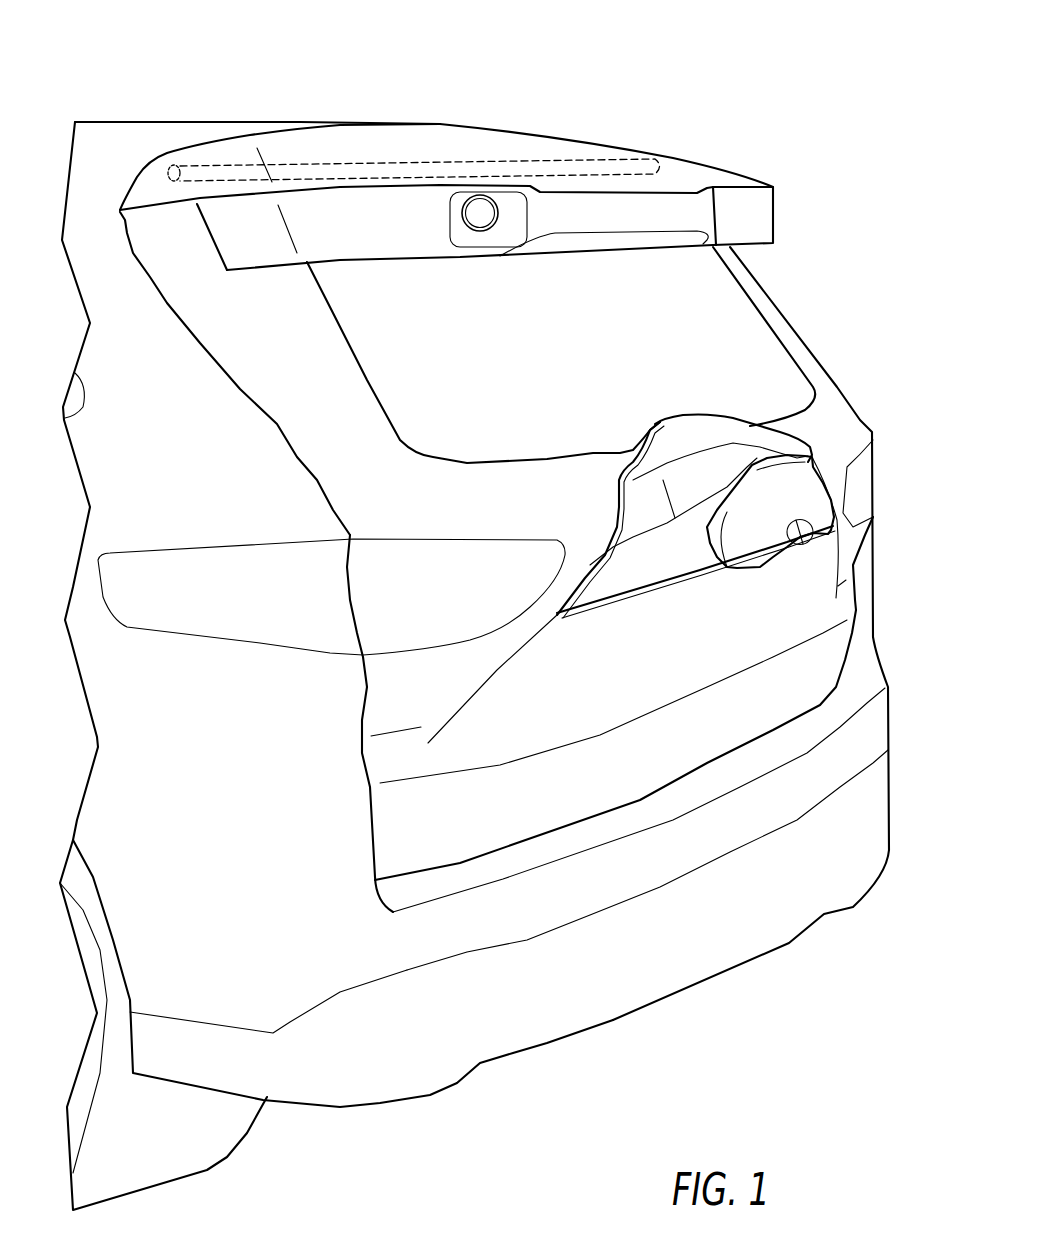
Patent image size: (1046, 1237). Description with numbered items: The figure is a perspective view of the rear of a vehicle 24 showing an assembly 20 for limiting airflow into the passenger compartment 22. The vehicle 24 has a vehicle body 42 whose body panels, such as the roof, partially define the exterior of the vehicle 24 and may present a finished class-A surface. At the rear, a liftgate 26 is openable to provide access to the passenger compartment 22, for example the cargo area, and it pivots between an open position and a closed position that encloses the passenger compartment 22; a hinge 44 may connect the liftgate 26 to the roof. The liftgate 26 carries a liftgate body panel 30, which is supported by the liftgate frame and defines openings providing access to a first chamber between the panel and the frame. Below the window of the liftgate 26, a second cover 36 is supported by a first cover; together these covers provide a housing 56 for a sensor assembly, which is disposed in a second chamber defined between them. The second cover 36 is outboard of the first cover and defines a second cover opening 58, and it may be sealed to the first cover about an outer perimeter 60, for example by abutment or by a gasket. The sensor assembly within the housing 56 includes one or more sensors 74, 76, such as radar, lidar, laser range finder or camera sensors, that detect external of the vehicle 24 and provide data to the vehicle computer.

The assembly 20 is at (840, 431).
The passenger compartment 22 is at (114, 472).
The vehicle 24 is at (167, 121).
The liftgate 26 is at (818, 667).
The liftgate body panel 30 is at (483, 500).
The second cover 36 is at (757, 447).
The vehicle body 42 is at (97, 263).
The hinge 44 is at (479, 158).
The housing 56 is at (584, 533).
The second cover opening 58 is at (703, 540).
The outer perimeter 60 is at (613, 480).
The sensor 74 is at (803, 545).
The sensor 76 is at (753, 563).